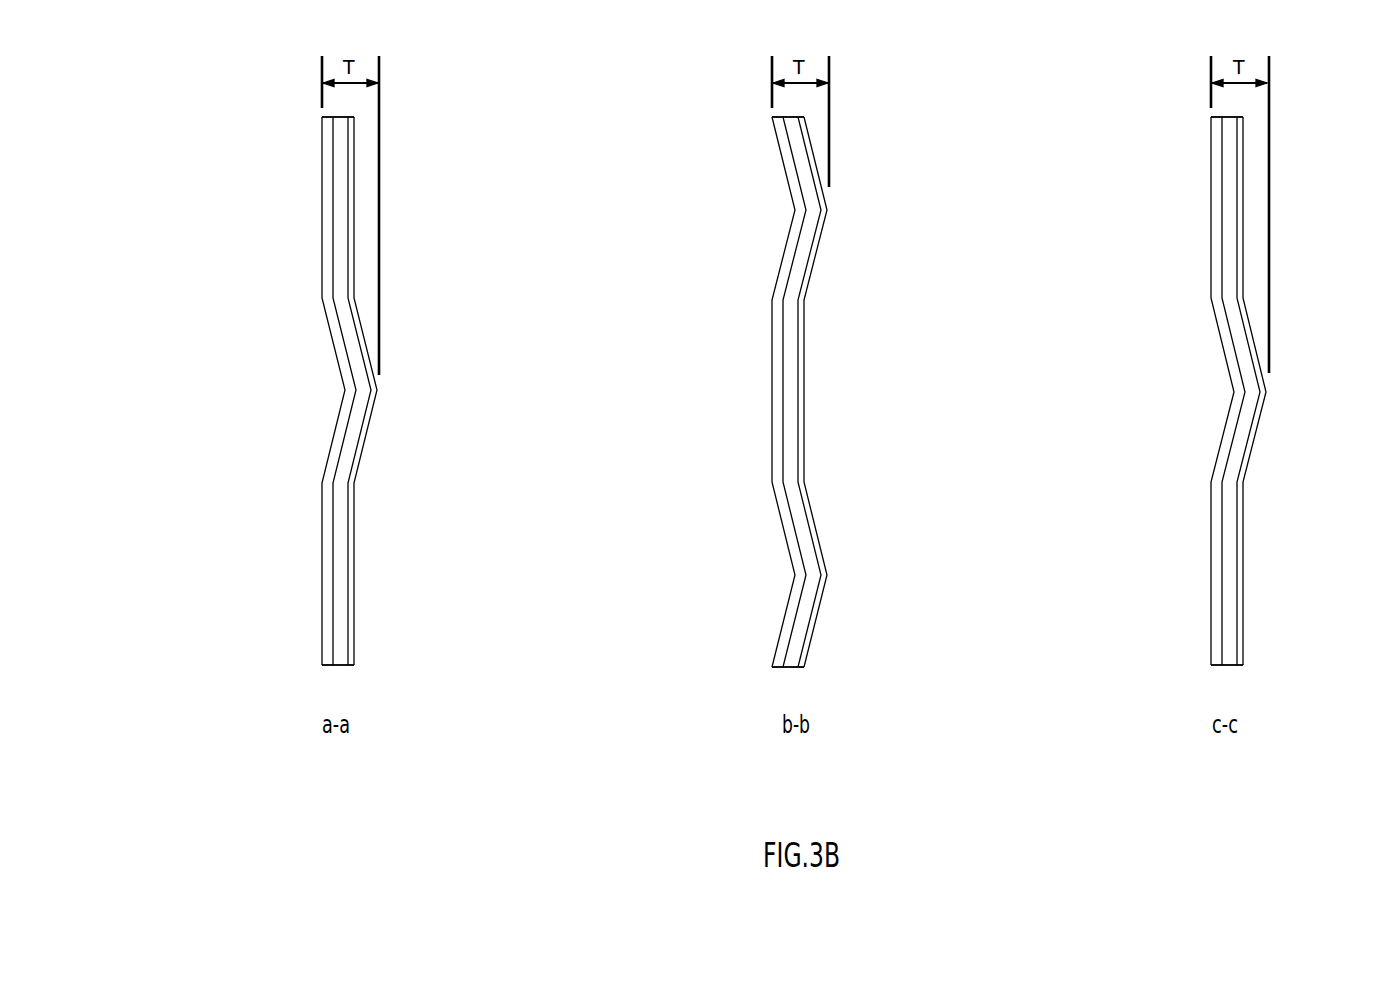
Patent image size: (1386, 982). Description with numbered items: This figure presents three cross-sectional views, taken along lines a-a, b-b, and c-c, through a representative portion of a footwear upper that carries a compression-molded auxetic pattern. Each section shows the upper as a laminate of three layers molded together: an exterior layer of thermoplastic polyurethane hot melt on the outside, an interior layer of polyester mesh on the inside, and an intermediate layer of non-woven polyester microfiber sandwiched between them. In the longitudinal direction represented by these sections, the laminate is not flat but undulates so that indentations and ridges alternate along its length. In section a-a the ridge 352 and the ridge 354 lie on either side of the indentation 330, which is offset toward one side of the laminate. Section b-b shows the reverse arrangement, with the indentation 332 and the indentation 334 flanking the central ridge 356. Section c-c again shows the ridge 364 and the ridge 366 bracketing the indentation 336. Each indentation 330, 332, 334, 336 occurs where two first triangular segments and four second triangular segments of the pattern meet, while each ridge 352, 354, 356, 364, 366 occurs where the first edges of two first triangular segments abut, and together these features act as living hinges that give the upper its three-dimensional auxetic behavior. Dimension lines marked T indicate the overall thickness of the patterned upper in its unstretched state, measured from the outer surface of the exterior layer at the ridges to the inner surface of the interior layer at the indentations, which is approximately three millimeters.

The indentation 330 is at (318, 388).
The indentation 332 is at (770, 214).
The indentation 334 is at (772, 568).
The indentation 336 is at (1207, 390).
The ridge 352 is at (300, 247).
The ridge 354 is at (298, 524).
The ridge 356 is at (748, 371).
The ridge 364 is at (1188, 245).
The ridge 366 is at (1186, 523).